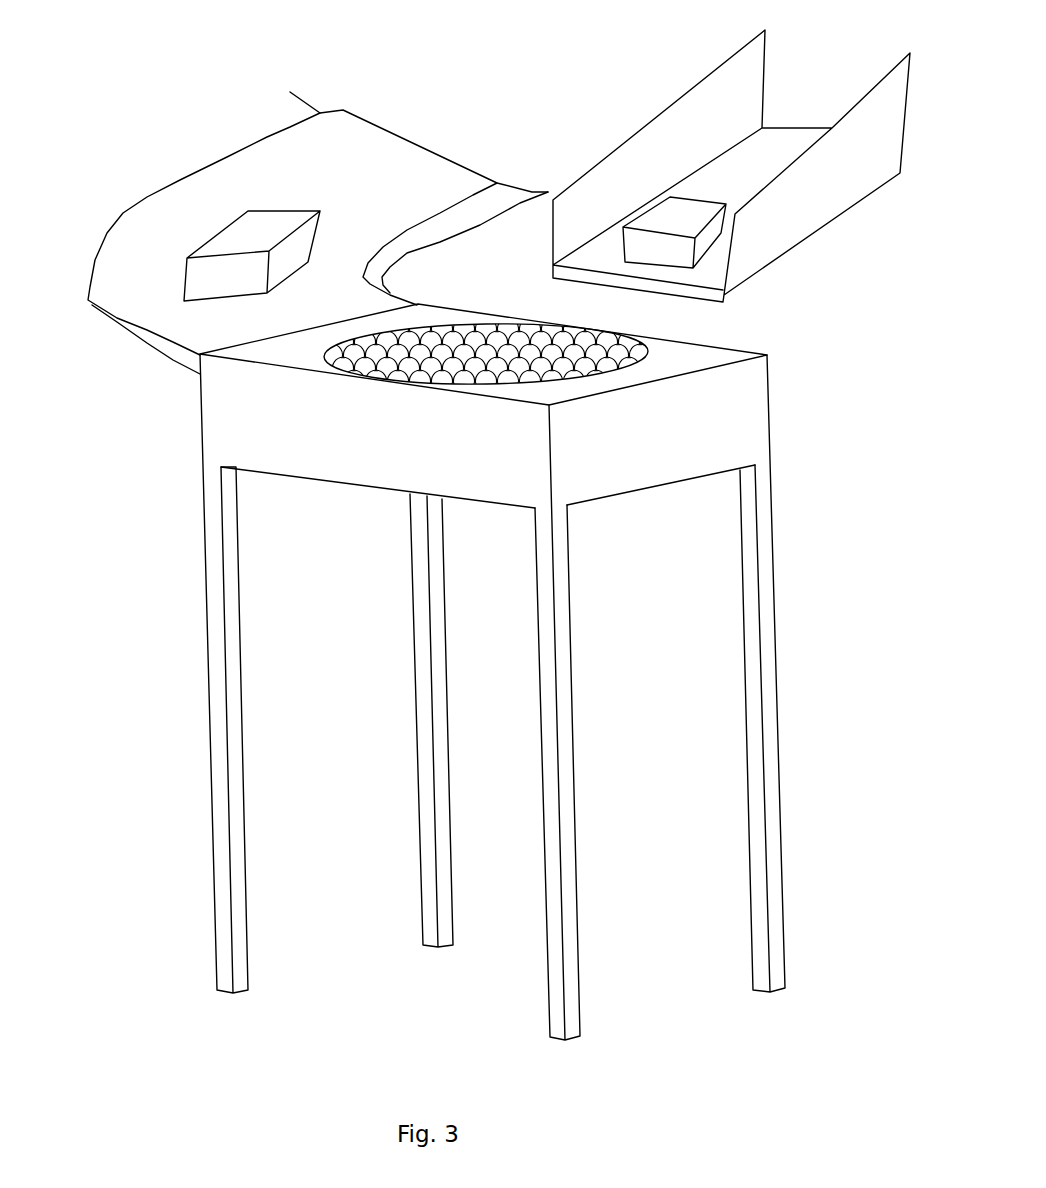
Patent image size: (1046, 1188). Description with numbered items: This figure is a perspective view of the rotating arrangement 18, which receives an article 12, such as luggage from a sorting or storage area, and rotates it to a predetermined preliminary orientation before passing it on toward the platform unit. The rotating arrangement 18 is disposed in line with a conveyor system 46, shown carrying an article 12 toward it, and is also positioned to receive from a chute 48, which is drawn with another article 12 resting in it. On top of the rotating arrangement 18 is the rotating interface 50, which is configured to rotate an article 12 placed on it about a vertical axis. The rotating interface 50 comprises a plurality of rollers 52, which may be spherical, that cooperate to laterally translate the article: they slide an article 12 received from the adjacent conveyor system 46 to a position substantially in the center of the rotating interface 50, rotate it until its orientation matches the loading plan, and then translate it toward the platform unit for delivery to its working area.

The article 12 is at (213, 247).
The rotating arrangement 18 is at (533, 672).
The conveyor system 46 is at (155, 338).
The chute 48 is at (858, 193).
The rotating interface 50 is at (298, 358).
The rollers 52 is at (553, 377).